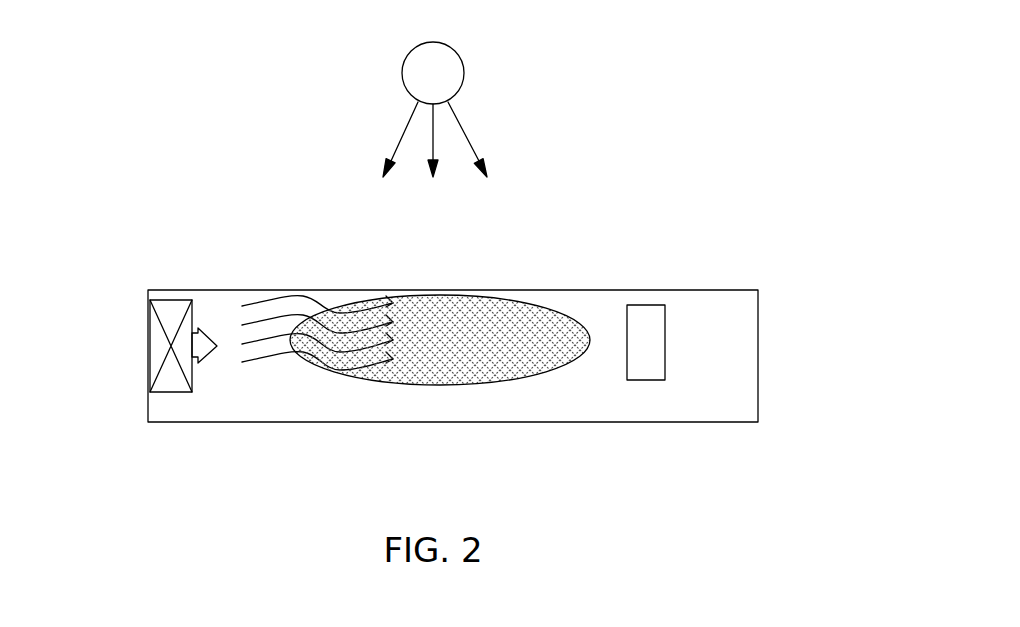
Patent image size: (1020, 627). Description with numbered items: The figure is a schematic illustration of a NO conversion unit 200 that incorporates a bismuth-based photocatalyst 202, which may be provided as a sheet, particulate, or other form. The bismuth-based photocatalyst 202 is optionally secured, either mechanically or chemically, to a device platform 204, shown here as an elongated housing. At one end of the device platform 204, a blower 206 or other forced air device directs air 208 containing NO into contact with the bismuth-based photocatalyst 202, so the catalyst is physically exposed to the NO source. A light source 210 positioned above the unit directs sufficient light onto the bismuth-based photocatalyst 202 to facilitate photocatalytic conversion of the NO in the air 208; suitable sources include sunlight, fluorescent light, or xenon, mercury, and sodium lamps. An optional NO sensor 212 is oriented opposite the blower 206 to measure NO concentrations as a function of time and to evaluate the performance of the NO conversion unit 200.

The NO conversion unit 200 is at (203, 174).
The bismuth-based photocatalyst 202 is at (543, 373).
The device platform 204 is at (758, 392).
The blower 206 is at (148, 356).
The air 208 is at (272, 358).
The light source 210 is at (464, 67).
The NO sensor 212 is at (645, 305).